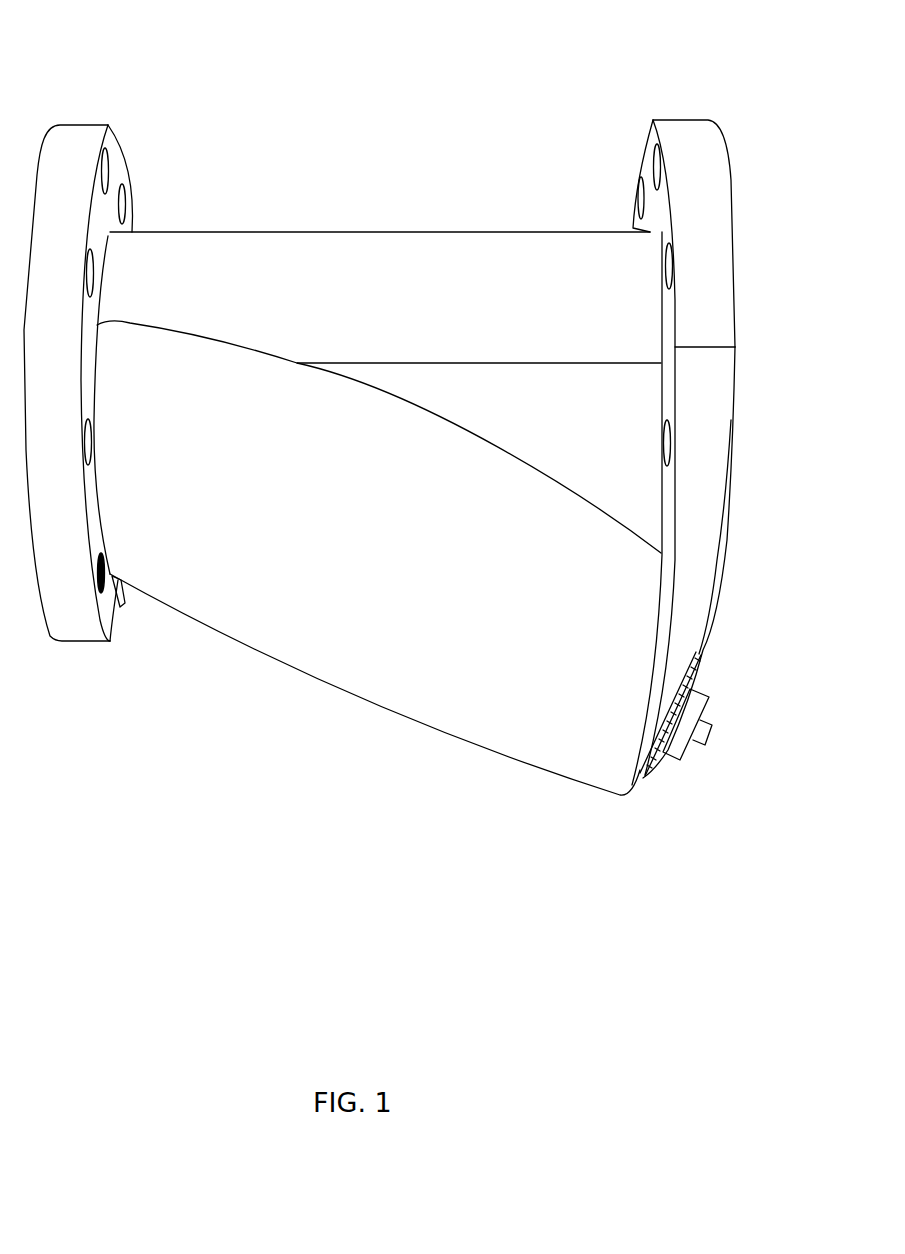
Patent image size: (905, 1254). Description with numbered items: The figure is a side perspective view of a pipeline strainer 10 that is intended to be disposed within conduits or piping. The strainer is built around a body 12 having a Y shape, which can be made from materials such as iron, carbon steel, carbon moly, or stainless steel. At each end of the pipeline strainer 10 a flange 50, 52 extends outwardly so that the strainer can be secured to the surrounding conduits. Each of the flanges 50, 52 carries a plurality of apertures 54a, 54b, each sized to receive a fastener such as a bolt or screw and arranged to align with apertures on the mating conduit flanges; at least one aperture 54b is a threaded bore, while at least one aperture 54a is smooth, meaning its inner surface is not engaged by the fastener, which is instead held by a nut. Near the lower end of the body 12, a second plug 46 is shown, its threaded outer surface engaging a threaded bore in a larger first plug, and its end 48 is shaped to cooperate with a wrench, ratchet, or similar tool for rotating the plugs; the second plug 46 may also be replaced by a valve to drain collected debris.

The pipeline strainer 10 is at (519, 120).
The body 12 is at (373, 277).
The second plug 46 is at (701, 660).
The end of second plug 48 is at (711, 729).
The flange 50 is at (75, 142).
The flange 52 is at (690, 130).
The smooth aperture 54a is at (108, 172).
The threaded aperture 54b is at (104, 585).